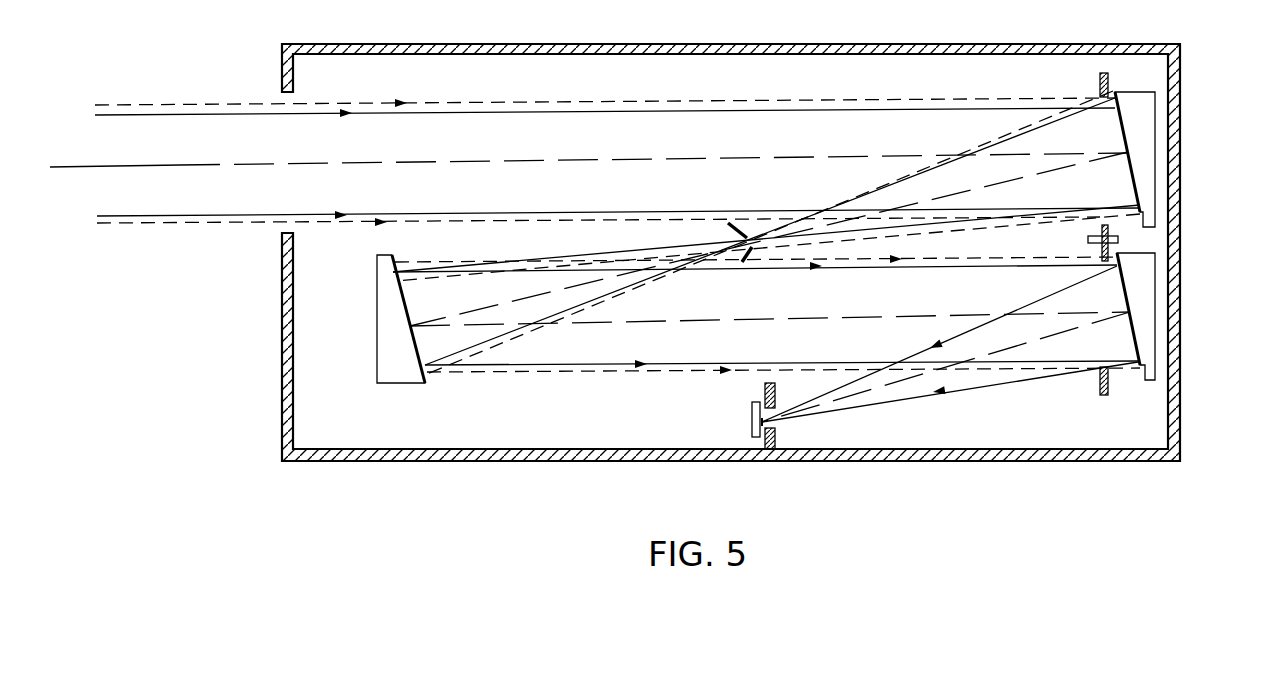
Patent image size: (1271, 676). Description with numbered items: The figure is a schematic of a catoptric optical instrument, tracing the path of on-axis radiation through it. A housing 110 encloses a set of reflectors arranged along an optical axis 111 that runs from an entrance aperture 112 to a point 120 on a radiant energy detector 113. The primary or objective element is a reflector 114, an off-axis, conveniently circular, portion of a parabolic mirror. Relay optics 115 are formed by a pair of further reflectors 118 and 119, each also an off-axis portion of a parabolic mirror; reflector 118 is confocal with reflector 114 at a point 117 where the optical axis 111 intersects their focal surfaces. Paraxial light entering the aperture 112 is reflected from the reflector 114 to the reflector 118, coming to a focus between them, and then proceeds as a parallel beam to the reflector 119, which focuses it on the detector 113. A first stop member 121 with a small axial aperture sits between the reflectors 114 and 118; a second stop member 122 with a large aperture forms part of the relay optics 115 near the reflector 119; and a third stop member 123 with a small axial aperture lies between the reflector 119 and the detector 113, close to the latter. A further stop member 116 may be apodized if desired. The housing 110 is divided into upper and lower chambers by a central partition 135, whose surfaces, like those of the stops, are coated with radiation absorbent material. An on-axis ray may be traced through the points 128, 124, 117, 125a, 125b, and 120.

The housing 110 is at (648, 44).
The optical axis 111 is at (78, 166).
The entrance aperture 112 is at (283, 91).
The radiant energy detector 113 is at (752, 425).
The reflector 114 is at (1182, 118).
The relay optics 115 is at (595, 388).
The stop member 116 is at (1100, 80).
The point 117 is at (753, 240).
The reflector 118 is at (377, 309).
The reflector 119 is at (1157, 292).
The point 120 is at (776, 422).
The first stop member 121 is at (730, 229).
The second stop member 122 is at (1108, 390).
The third stop member 123 is at (765, 392).
The point 124 is at (1142, 210).
The point 125a is at (393, 272).
The point 125b is at (1122, 262).
The point 128 is at (122, 216).
The central partition 135 is at (1088, 240).